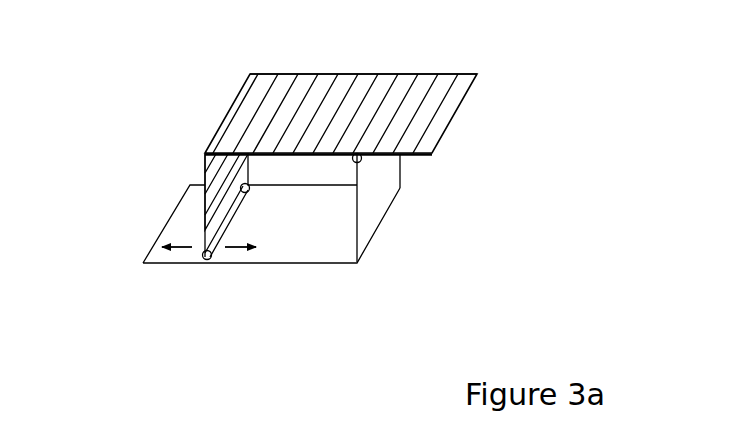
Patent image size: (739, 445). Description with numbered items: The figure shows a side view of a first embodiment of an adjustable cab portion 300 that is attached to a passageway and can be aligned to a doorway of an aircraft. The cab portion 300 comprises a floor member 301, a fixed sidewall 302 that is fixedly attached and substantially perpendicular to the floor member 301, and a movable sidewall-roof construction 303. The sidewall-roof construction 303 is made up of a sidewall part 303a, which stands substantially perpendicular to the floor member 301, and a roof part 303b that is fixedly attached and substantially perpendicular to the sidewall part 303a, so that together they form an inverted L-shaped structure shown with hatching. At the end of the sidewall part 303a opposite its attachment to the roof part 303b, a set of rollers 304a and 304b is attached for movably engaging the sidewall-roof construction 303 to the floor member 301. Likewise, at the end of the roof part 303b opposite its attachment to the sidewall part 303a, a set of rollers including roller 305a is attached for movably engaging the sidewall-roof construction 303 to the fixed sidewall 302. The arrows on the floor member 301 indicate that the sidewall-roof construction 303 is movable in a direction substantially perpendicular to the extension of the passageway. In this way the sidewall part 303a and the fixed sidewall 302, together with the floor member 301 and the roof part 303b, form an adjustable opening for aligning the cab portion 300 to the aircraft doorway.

The adjustable cab portion 300 is at (140, 120).
The floor member 301 is at (183, 228).
The fixed sidewall 302 is at (393, 197).
The movable sidewall-roof construction 303 is at (453, 112).
The sidewall part 303a is at (205, 168).
The roof part 303b is at (308, 80).
The roller 304a is at (203, 260).
The roller 304b is at (250, 196).
The roller 305a is at (355, 163).